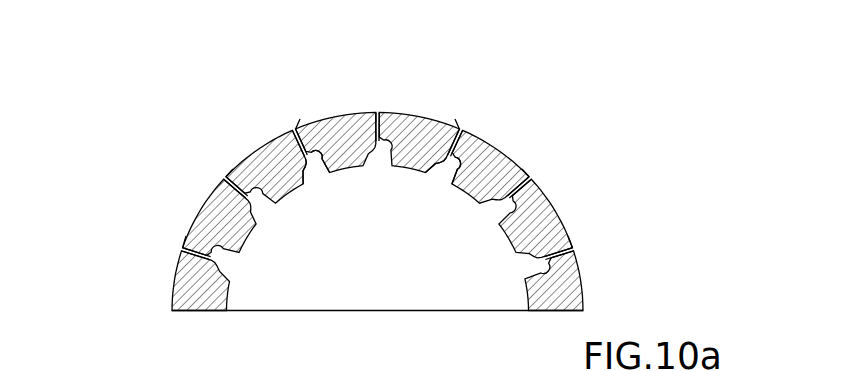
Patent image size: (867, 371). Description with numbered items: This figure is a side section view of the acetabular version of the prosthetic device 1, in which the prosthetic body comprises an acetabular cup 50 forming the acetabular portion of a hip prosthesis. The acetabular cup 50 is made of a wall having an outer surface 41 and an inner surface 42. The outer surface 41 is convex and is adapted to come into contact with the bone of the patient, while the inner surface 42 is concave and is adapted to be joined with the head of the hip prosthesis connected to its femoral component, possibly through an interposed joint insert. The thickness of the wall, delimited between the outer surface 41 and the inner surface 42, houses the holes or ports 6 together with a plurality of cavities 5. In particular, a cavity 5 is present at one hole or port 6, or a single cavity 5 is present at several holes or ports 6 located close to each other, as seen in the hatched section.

The prosthetic device 1 is at (410, 177).
The cavity 5 is at (258, 207).
The hole or port 6 is at (292, 127).
The outer surface 41 is at (197, 208).
The inner surface 42 is at (348, 177).
The acetabular cup 50 is at (170, 301).